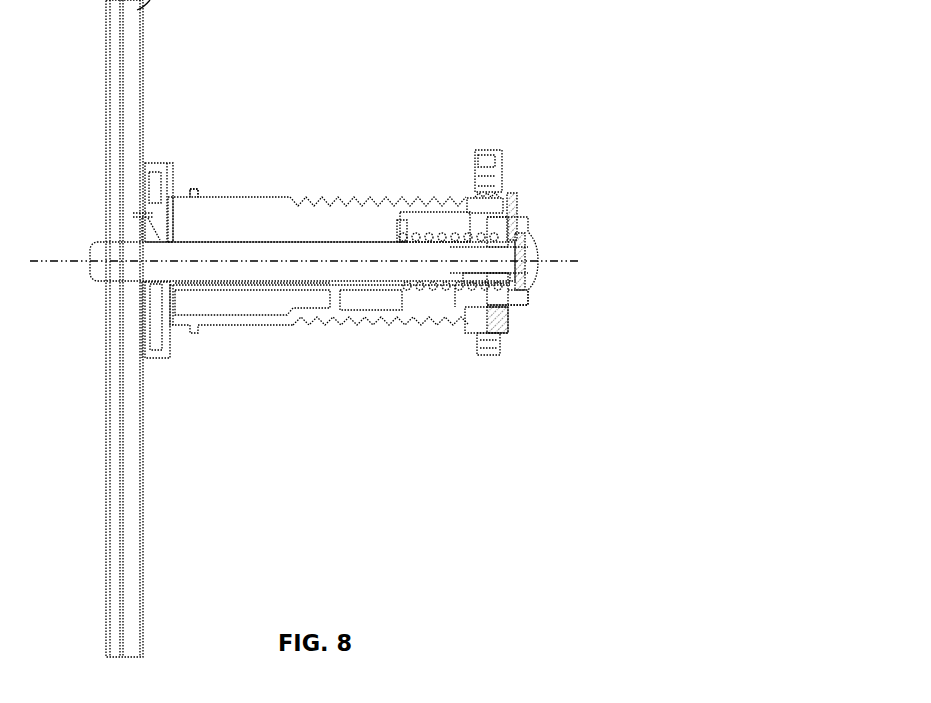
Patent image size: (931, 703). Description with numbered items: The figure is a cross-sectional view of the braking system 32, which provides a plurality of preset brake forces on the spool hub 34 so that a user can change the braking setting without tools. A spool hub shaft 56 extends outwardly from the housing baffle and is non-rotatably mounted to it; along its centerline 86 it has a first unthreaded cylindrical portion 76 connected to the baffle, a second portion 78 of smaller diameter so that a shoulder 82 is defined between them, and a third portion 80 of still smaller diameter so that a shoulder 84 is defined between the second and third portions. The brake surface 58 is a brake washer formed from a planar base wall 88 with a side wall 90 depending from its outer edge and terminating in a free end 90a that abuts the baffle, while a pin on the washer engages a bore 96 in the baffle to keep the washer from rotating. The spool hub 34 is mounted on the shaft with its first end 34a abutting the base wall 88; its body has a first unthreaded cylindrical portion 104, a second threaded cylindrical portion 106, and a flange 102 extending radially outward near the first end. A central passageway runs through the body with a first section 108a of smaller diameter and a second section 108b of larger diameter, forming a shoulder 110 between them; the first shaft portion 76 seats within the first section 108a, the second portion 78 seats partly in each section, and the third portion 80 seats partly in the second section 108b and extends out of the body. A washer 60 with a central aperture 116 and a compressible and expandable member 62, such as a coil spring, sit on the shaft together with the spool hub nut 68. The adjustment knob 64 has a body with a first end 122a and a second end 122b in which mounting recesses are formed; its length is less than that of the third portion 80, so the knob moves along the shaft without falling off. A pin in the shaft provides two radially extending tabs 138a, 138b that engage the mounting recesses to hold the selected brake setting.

The braking system 32 is at (554, 190).
The spool hub 34 is at (257, 197).
The first end of spool hub 34a is at (167, 211).
The spool hub shaft 56 is at (328, 236).
The brake surface 58 is at (172, 158).
The washer 60 is at (405, 293).
The compressible and expandable member 62 is at (448, 297).
The adjustment knob 64 is at (517, 313).
The spool hub nut 68 is at (491, 147).
The first unthreaded cylindrical portion 76 is at (303, 268).
The second unthreaded cylindrical portion 78 is at (430, 266).
The third unthreaded cylindrical portion 80 is at (508, 262).
The shoulder 82 is at (385, 242).
The shoulder 84 is at (467, 240).
The centerline 86 is at (105, 275).
The planar base wall 88 is at (165, 340).
The side wall 90 is at (150, 163).
The free end of side wall 90a is at (142, 358).
The bore 96 is at (147, 209).
The flange 102 is at (193, 189).
The first unthreaded cylindrical portion 104 is at (277, 210).
The second threaded cylindrical portion 106 is at (330, 238).
The first section of central passageway 108a is at (236, 282).
The second section of central passageway 108b is at (453, 305).
The shoulder 110 is at (402, 212).
The central aperture 116 is at (407, 283).
The first end of adjustment knob body 122a is at (485, 303).
The second end of adjustment knob body 122b is at (532, 300).
The radially extending tab 138a is at (530, 238).
The radially extending tab 138b is at (532, 278).